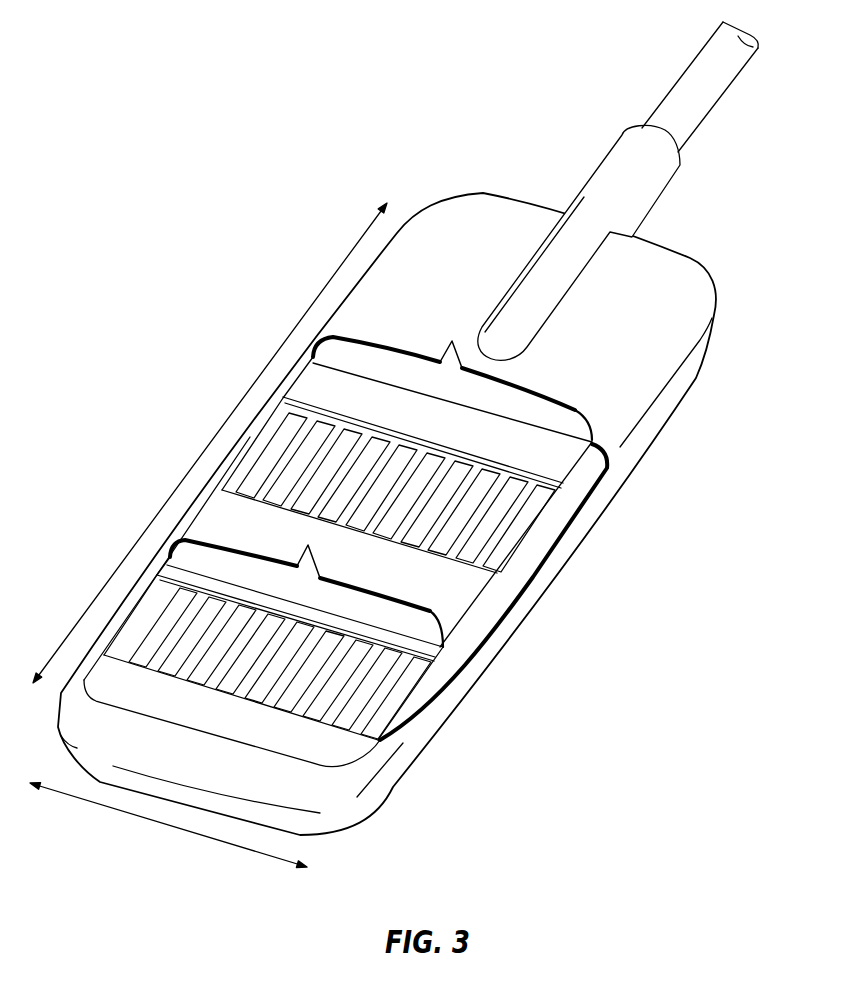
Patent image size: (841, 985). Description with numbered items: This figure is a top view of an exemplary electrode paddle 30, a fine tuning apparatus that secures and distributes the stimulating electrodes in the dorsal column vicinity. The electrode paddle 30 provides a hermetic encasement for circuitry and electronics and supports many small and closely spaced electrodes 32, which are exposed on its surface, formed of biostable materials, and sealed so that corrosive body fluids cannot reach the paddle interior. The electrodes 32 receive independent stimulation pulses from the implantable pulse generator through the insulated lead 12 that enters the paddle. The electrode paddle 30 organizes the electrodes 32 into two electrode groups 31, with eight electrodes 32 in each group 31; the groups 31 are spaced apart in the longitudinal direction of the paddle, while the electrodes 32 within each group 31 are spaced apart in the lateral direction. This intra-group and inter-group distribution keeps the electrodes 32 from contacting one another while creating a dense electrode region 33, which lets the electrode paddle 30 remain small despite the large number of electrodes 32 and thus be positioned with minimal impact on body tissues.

The insulated lead 12 is at (718, 53).
The electrode paddle 30 is at (213, 244).
The electrode group 31 is at (452, 342).
The electrodes 32 is at (313, 475).
The dense electrode region 33 is at (531, 576).